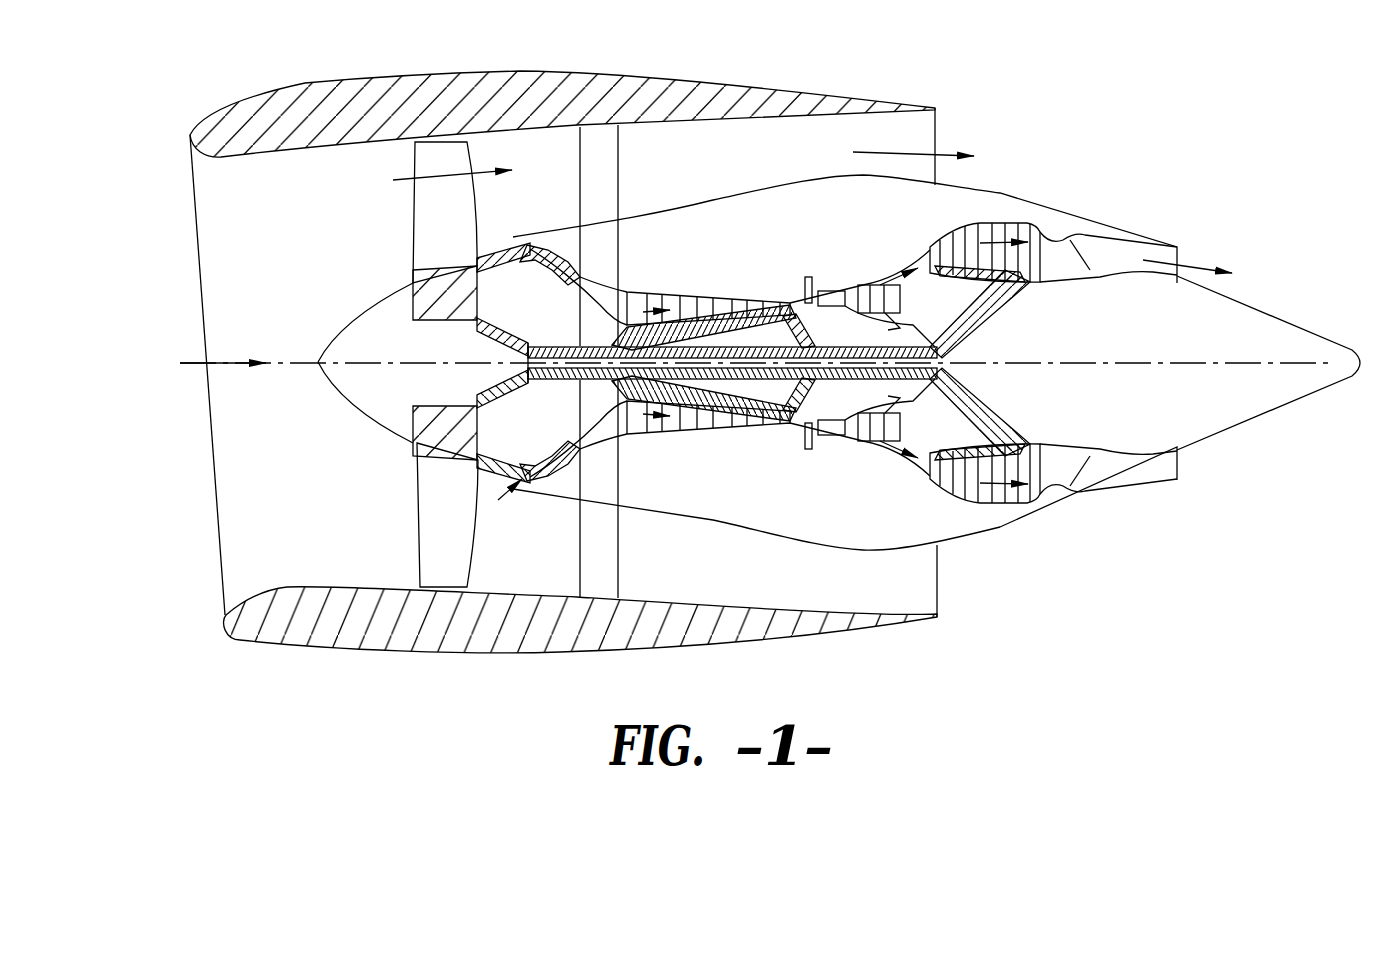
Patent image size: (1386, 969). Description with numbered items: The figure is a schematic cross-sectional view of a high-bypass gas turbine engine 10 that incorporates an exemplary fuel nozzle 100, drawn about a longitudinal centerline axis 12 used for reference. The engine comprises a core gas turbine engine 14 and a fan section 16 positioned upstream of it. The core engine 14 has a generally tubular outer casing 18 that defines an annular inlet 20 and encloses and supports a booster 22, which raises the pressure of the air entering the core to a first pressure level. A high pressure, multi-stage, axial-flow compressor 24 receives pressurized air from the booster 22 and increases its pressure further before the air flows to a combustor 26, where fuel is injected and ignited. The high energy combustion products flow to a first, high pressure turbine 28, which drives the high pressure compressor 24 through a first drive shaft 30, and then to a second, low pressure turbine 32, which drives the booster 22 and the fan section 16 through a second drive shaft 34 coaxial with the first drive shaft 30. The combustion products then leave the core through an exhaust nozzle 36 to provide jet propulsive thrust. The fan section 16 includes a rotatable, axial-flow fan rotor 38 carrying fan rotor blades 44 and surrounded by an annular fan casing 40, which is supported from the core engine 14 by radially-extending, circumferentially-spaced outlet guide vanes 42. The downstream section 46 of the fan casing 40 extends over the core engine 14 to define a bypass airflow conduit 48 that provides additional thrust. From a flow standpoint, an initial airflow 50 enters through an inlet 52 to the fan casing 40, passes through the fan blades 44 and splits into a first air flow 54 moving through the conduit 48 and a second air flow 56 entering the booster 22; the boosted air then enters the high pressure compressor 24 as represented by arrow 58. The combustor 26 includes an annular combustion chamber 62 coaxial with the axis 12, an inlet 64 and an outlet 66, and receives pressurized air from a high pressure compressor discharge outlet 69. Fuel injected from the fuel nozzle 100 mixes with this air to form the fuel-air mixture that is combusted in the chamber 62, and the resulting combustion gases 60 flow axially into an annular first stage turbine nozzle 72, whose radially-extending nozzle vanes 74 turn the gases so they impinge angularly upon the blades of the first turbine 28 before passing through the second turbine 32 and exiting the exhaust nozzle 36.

The gas turbine engine 10 is at (1100, 147).
The longitudinal centerline axis 12 is at (1100, 362).
The core gas turbine engine 14 is at (827, 242).
The fan section 16 is at (487, 58).
The outer casing 18 is at (797, 541).
The annular inlet 20 is at (512, 488).
The booster 22 is at (583, 440).
The high pressure compressor 24 is at (648, 432).
The combustor 26 is at (830, 434).
The first (high pressure) turbine 28 is at (905, 437).
The first (high pressure) drive shaft 30 is at (874, 313).
The second (low pressure) turbine 32 is at (1028, 504).
The second (low pressure) drive shaft 34 is at (580, 348).
The exhaust nozzle 36 is at (1180, 253).
The fan rotor 38 is at (470, 324).
The fan casing 40 is at (478, 656).
The outlet guide vanes 42 is at (620, 148).
The fan rotor blades 44 is at (413, 534).
The downstream section 46 is at (828, 94).
The bypass airflow conduit 48 is at (736, 151).
The initial airflow 50 is at (220, 362).
The inlet 52 is at (222, 583).
The first air flow 54 is at (427, 177).
The second air flow 56 is at (498, 250).
The compressed airflow into high pressure compressor 58 is at (634, 293).
The combustion products 60 is at (870, 283).
The combustion chamber 62 is at (850, 438).
The inlet 64 is at (787, 285).
The outlet 66 is at (837, 290).
The high pressure compressor discharge outlet 69 is at (797, 438).
The first stage turbine nozzle 72 is at (850, 444).
The nozzle vanes 74 is at (840, 417).
The fuel nozzle 100 is at (796, 277).